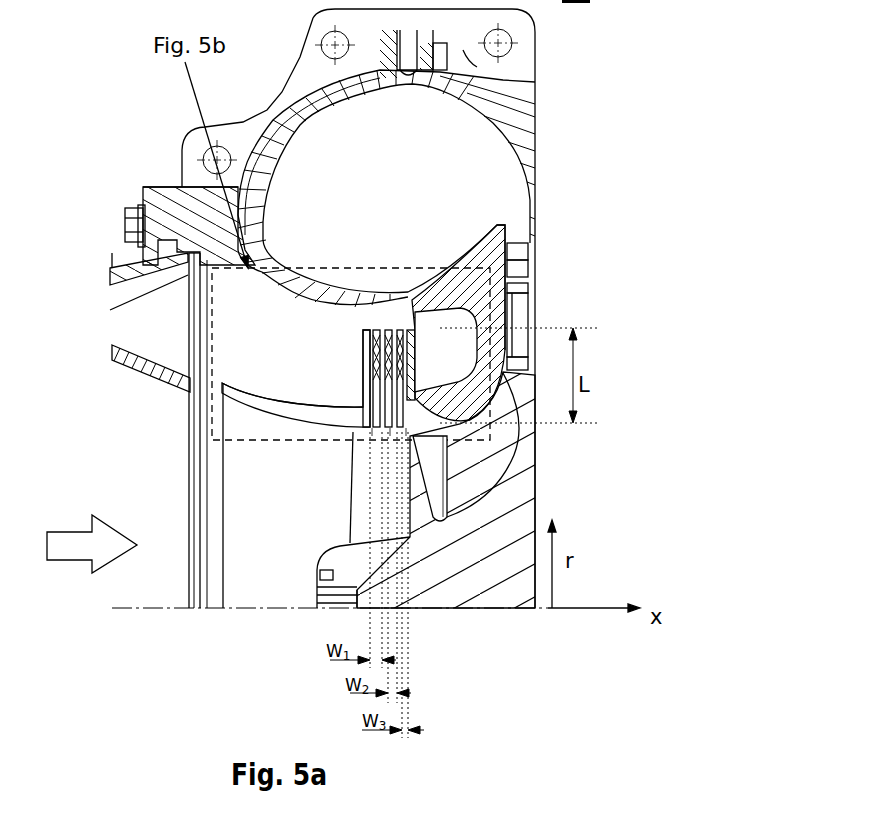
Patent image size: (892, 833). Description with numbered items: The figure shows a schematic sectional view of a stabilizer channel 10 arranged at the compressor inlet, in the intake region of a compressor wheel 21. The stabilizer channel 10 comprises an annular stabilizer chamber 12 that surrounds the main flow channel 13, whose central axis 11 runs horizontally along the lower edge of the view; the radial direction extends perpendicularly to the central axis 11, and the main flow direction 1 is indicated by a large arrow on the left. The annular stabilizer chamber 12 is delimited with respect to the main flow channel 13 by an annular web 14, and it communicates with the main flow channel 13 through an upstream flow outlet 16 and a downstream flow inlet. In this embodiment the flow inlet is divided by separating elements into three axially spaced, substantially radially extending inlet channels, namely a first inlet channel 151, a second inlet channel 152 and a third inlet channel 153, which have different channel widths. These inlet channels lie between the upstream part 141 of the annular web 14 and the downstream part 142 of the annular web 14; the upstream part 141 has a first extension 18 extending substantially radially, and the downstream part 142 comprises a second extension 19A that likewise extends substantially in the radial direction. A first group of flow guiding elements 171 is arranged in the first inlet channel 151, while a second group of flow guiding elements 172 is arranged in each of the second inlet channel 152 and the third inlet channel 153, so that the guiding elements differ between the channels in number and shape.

The main flow direction 1 is at (110, 555).
The stabilizer channel 10 is at (226, 262).
The central axis 11 is at (228, 610).
The annular stabilizer chamber 12 is at (280, 321).
The main flow channel 13 is at (260, 515).
The annular web 14 is at (348, 406).
The upstream part of the annular web 141 is at (303, 387).
The downstream part of the annular web 142 is at (457, 384).
The flow outlet 16 is at (203, 392).
The first extension 18 is at (364, 336).
The first group of flow guiding elements 171 is at (374, 330).
The second group of flow guiding elements 172 is at (388, 330).
The second extension 19A is at (410, 328).
The first inlet channel 151 is at (372, 436).
The second inlet channel 152 is at (390, 437).
The third inlet channel 153 is at (406, 436).
The compressor wheel 21 is at (463, 595).